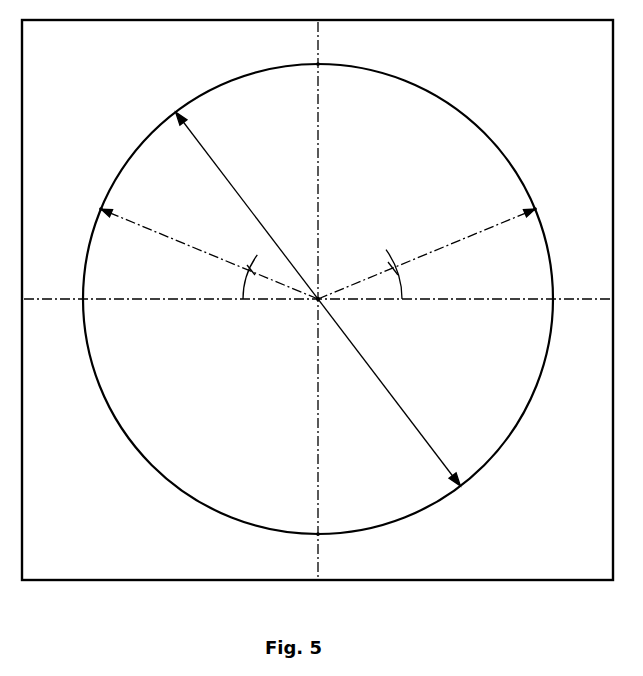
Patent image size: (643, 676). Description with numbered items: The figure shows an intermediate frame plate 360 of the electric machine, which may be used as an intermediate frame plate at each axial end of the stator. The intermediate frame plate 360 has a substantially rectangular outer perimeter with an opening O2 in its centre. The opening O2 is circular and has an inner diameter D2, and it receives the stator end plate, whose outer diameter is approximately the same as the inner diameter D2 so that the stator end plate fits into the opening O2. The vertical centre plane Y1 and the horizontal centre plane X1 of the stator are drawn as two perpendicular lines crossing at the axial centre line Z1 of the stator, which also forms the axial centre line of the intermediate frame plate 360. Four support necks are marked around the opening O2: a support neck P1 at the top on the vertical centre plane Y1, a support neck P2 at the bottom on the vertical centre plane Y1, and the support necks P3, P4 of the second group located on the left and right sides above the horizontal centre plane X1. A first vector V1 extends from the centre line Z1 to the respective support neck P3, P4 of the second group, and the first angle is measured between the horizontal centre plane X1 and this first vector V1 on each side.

The intermediate frame plate 360 is at (566, 67).
The opening O2 is at (156, 462).
The horizontal centre plane X1 is at (317, 286).
The vertical centre plane Y1 is at (333, 300).
The first vector V1 is at (202, 252).
The inner diameter D2 is at (318, 299).
The axial centre line Z1 is at (309, 308).
The support neck P1 is at (303, 55).
The support neck P2 is at (305, 546).
The support neck P3 is at (95, 190).
The support neck P4 is at (545, 193).